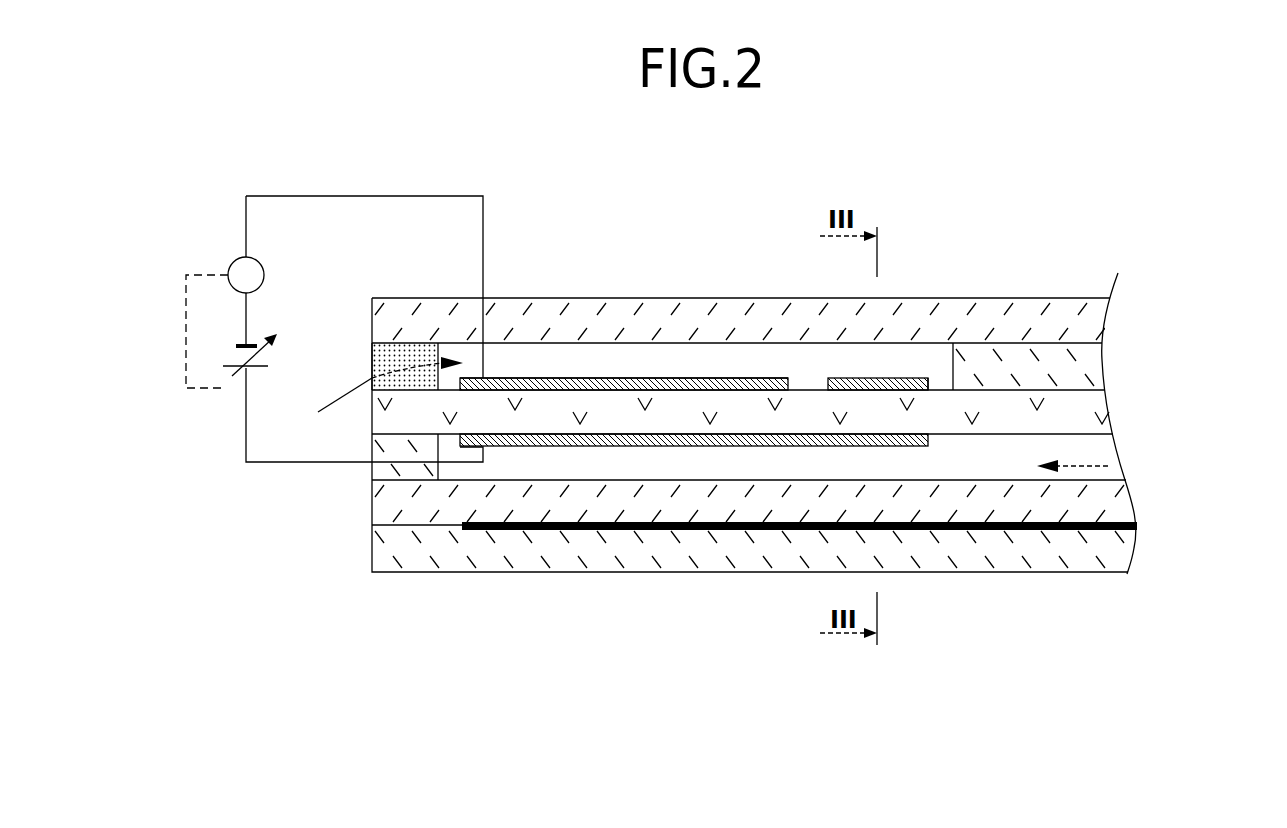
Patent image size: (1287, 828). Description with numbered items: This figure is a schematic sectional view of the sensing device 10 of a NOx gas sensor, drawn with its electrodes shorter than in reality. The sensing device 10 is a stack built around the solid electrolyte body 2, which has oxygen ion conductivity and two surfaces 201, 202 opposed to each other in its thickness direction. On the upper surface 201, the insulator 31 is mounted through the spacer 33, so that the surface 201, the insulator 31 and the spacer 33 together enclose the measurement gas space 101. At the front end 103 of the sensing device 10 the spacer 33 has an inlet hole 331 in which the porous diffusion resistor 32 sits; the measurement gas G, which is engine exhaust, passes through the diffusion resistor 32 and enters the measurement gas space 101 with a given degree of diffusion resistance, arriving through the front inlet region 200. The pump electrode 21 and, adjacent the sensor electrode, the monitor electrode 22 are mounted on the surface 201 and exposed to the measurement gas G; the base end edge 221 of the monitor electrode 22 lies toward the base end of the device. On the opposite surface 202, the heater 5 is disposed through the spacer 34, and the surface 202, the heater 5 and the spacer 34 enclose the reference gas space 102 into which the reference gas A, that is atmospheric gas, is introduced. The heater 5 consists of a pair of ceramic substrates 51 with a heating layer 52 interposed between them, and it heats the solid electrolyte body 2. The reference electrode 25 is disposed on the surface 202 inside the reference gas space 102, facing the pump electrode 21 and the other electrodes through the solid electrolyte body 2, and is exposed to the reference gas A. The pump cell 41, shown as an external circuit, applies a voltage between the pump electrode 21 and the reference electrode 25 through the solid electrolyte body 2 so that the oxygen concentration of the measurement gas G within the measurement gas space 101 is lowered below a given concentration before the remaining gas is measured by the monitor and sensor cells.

The sensing device 10 is at (1050, 256).
The measurement gas space 101 is at (752, 372).
The reference gas space 102 is at (637, 460).
The front end 103 is at (372, 516).
The solid electrolyte body 2 is at (665, 413).
The gas inlet 200 is at (522, 462).
The surface 201 is at (1080, 390).
The surface 202 is at (1063, 436).
The pump electrode 21 is at (548, 378).
The monitor electrode 22 is at (903, 380).
The base end edge 221 is at (928, 386).
The reference electrode 25 is at (720, 447).
The insulator 31 is at (506, 320).
The diffusion resistor 32 is at (403, 362).
The spacer 33 is at (1065, 368).
The inlet hole 331 is at (372, 362).
The spacer 34 is at (400, 467).
The pump cell 41 is at (228, 215).
The heater 5 is at (936, 580).
The ceramic substrates 51 is at (1015, 500).
The heating layer 52 is at (793, 531).
The measurement gas G is at (350, 392).
The reference gas A is at (1080, 465).